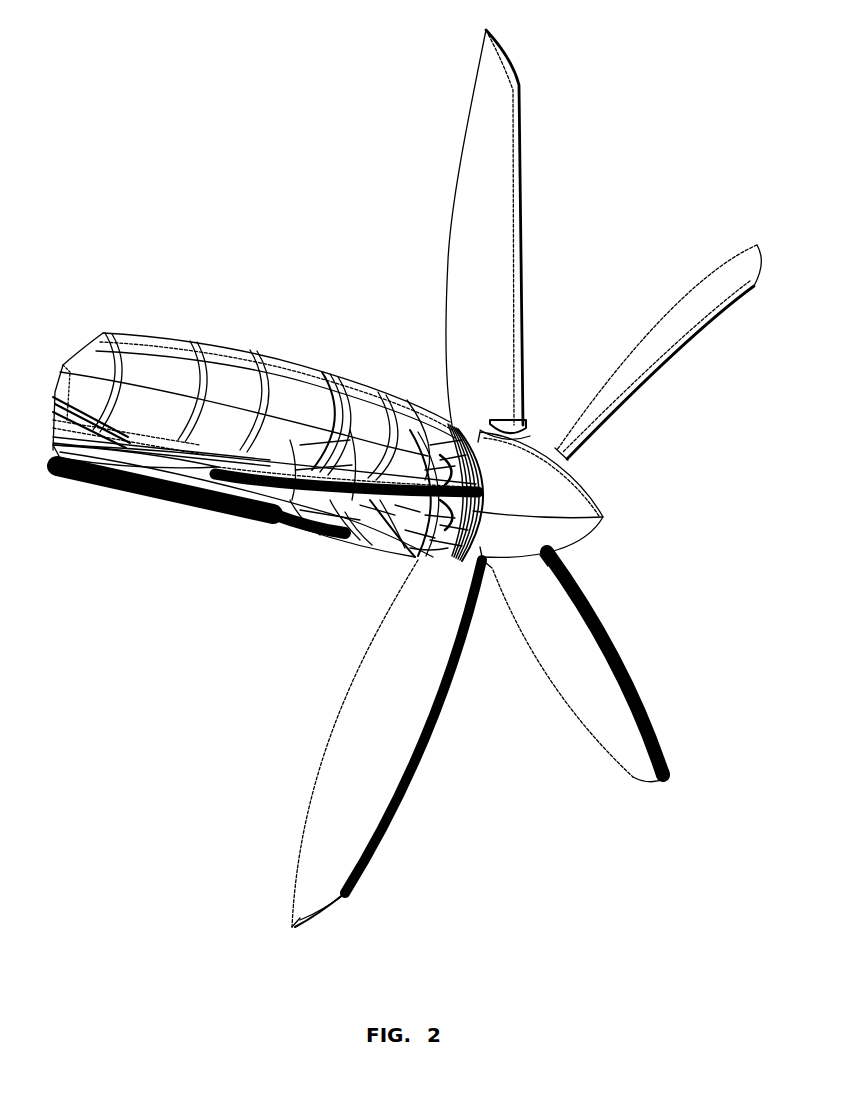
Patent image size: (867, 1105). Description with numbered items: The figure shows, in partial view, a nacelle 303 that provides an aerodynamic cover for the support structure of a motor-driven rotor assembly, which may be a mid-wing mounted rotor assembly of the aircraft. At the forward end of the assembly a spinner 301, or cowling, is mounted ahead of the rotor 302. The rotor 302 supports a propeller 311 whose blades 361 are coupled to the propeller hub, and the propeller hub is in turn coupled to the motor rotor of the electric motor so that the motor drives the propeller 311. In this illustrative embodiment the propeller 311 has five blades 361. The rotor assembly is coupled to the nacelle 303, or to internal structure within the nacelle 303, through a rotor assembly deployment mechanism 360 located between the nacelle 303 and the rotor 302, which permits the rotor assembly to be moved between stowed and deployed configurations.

The spinner 301 is at (588, 478).
The rotor 302 is at (531, 375).
The nacelle 303 is at (268, 352).
The propeller 311 is at (746, 290).
The rotor assembly deployment mechanism 360 is at (405, 550).
The blades 361 is at (376, 848).